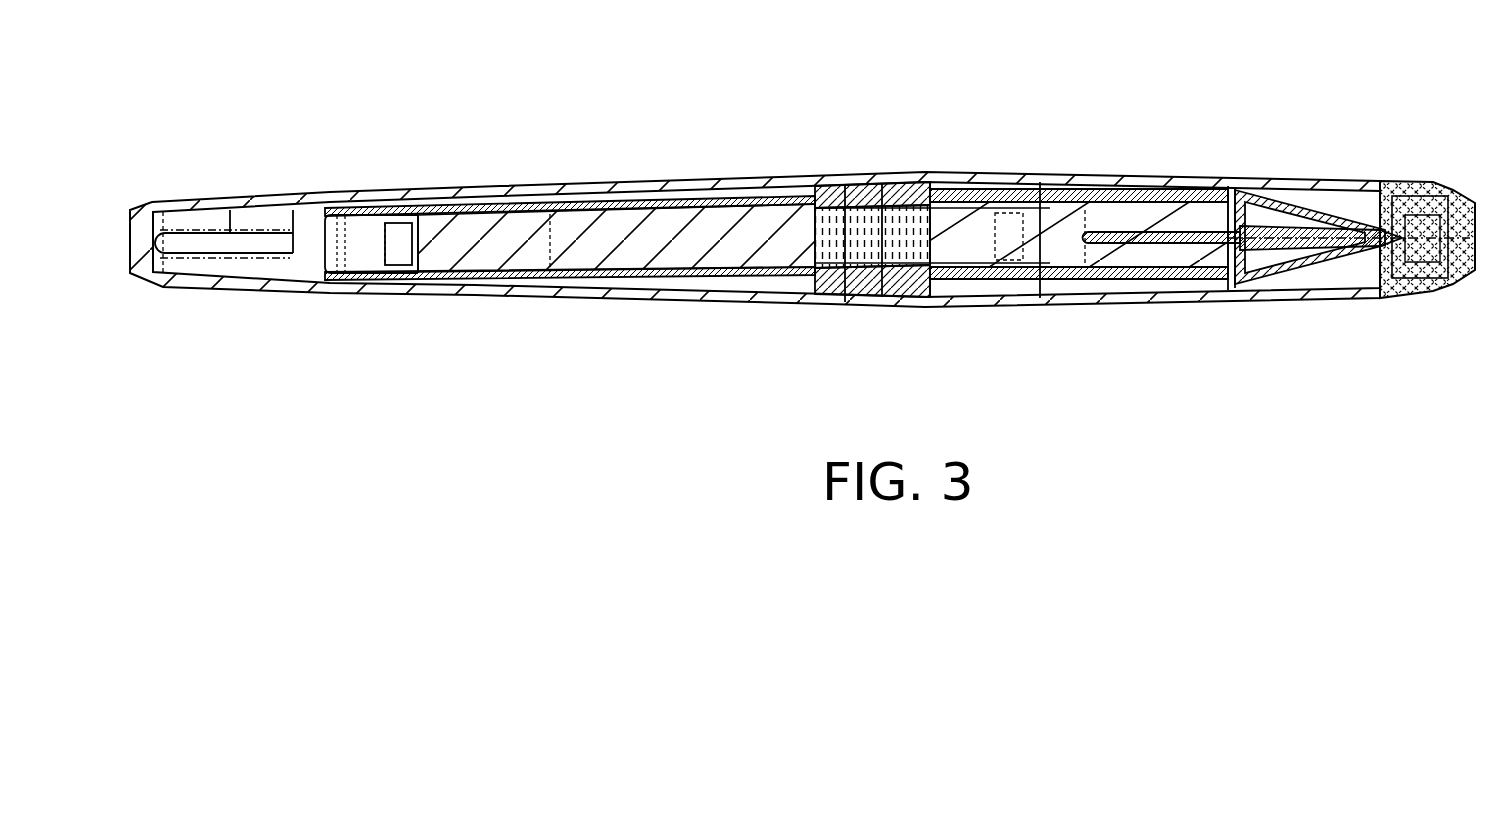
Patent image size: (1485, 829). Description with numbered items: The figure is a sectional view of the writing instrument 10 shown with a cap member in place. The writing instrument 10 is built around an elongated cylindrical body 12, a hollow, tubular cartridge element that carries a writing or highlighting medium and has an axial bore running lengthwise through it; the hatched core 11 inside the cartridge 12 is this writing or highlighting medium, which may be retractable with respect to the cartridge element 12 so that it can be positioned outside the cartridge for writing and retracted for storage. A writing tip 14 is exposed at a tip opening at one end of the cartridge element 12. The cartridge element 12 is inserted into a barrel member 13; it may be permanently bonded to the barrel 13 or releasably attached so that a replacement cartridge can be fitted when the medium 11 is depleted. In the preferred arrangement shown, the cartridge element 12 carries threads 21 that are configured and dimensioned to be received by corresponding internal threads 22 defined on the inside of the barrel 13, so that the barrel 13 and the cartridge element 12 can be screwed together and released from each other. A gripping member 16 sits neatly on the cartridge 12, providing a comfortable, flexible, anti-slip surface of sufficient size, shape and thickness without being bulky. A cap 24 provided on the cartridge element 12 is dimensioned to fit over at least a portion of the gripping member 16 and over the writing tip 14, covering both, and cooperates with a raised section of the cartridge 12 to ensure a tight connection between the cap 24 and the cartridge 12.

The writing instrument 10 is at (949, 61).
The ink refill 11 is at (632, 183).
The elongated cylindrical body 12 is at (725, 180).
The barrel member 13 is at (530, 187).
The writing tip 14 is at (1372, 232).
The gripping member 16 is at (1141, 190).
The threads 21 is at (925, 297).
The internal threads 22 is at (845, 303).
The cap 24 is at (1296, 299).